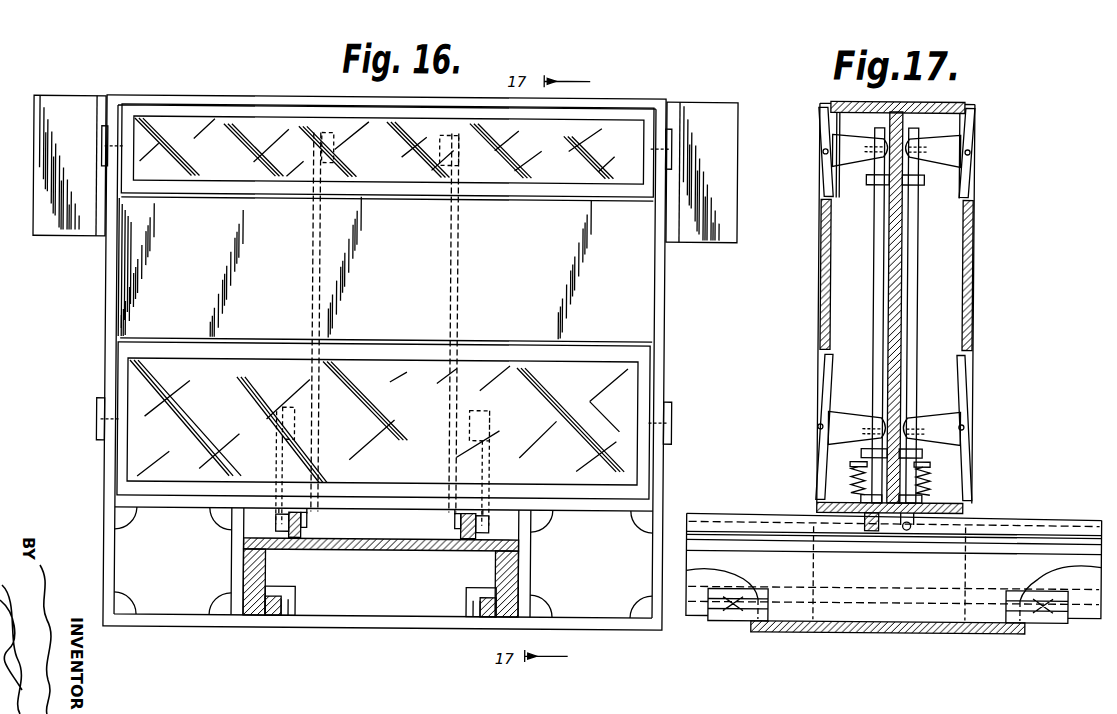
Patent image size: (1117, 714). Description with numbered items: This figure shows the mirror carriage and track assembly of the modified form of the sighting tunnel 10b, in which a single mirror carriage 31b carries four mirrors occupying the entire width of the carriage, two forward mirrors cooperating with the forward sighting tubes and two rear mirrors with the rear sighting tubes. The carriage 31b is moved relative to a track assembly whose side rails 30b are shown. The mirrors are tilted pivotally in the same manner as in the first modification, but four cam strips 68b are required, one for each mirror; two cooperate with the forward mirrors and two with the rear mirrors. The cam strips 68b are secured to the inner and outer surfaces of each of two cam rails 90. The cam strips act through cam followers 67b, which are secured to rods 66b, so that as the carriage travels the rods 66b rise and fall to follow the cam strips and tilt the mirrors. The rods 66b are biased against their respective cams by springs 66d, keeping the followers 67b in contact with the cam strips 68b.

In FIG. 16, the mirror carriage 31b is at (665, 350).
In FIG. 17, the mirror carriage 31b is at (973, 262).
In FIG. 16, the side rails 30b is at (245, 575).
In FIG. 16, the rods 66b is at (300, 445).
In FIG. 17, the rods 66b is at (873, 400).
In FIG. 17, the springs 66d is at (851, 482).
In FIG. 16, the cam followers 67b is at (291, 513).
In FIG. 16, the cam strips 68b is at (283, 550).
In FIG. 17, the cam strips 68b is at (1030, 536).
In FIG. 16, the cam rails 90 is at (308, 530).
In FIG. 17, the cam rails 90 is at (768, 498).
In FIG. 17, the tunnel 10b is at (688, 620).